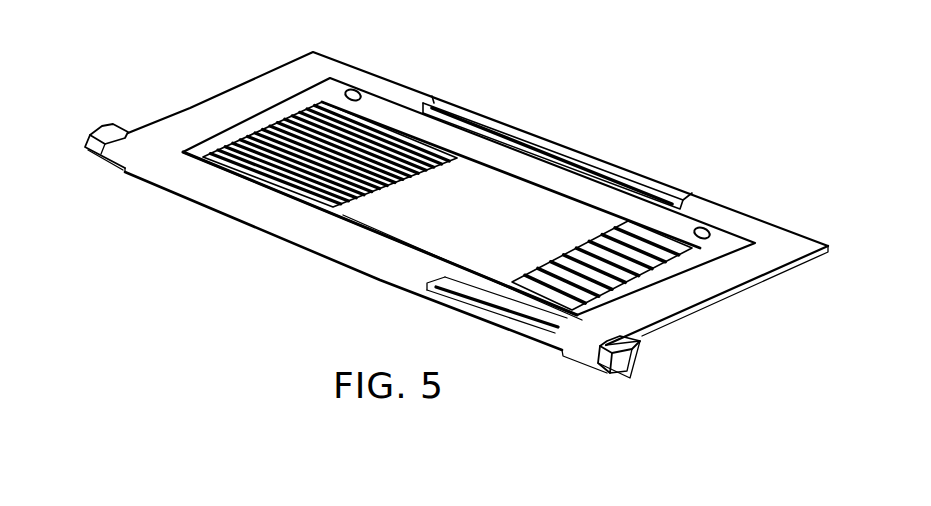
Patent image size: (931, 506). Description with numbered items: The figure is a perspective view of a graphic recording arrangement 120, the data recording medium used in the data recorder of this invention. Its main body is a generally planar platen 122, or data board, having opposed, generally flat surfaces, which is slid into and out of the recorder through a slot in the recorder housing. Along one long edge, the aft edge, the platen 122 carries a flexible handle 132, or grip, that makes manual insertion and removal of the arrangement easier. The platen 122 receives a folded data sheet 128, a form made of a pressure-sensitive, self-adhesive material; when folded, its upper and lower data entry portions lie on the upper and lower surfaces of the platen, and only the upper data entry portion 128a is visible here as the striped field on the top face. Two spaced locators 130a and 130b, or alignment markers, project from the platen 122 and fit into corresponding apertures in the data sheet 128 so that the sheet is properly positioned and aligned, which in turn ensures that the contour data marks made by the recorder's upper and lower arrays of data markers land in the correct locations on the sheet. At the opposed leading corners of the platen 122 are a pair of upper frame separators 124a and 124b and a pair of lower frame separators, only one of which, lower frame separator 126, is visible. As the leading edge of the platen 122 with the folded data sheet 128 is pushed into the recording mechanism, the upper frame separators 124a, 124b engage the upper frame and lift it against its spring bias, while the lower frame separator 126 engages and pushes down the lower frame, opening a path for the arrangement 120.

The graphic recording arrangement 120 is at (675, 144).
The platen 122 is at (325, 70).
The upper frame separator 124a is at (105, 126).
The upper frame separator 124b is at (602, 366).
The lower frame separator 126 is at (628, 374).
The data sheet 128 is at (255, 208).
The upper data entry portion 128a is at (334, 199).
The locator 130a is at (360, 92).
The locator 130b is at (706, 228).
The flexible handle 132 is at (540, 150).